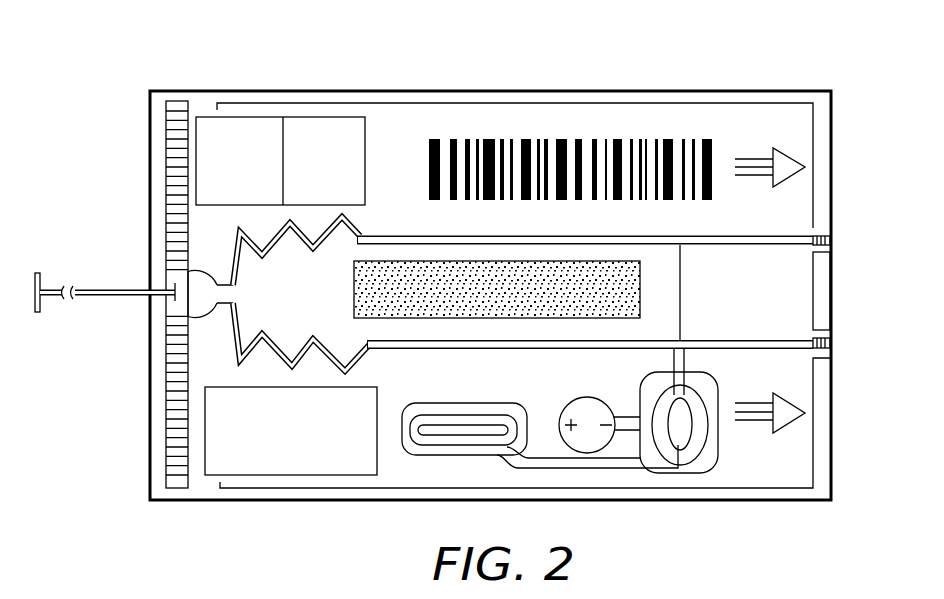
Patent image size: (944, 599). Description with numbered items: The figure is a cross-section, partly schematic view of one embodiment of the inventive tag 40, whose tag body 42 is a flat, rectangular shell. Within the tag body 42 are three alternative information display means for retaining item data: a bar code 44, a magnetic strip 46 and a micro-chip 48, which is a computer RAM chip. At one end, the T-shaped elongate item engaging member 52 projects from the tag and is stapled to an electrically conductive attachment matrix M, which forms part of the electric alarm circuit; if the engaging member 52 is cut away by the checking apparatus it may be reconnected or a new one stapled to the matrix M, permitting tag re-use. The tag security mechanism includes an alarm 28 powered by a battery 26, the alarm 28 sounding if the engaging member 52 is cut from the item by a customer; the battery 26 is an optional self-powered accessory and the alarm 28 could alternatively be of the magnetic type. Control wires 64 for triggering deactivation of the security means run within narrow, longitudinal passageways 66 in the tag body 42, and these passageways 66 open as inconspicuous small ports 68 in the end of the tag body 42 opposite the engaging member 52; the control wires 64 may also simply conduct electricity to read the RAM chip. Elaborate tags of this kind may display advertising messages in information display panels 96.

The tag 40 is at (746, 48).
The tag body 42 is at (565, 91).
The bar code 44 is at (618, 140).
The magnetic strip 46 is at (585, 262).
The micro-chip 48 is at (697, 473).
The battery 26 is at (601, 447).
The alarm 28 is at (445, 457).
The elongate item engaging member 52 is at (103, 300).
The control wires 64 is at (718, 340).
The passageways 66 is at (512, 236).
The ports 68 is at (822, 328).
The information display panels 96 is at (318, 117).
The electrically conductive attachment matrix M is at (166, 435).